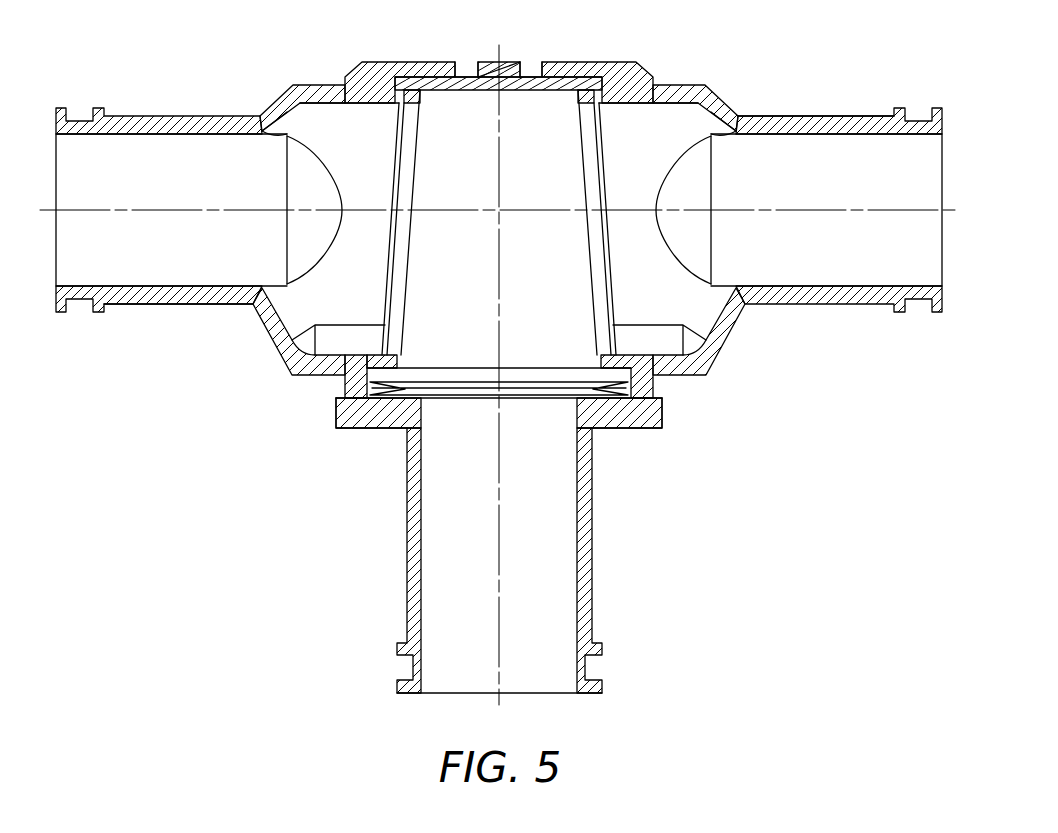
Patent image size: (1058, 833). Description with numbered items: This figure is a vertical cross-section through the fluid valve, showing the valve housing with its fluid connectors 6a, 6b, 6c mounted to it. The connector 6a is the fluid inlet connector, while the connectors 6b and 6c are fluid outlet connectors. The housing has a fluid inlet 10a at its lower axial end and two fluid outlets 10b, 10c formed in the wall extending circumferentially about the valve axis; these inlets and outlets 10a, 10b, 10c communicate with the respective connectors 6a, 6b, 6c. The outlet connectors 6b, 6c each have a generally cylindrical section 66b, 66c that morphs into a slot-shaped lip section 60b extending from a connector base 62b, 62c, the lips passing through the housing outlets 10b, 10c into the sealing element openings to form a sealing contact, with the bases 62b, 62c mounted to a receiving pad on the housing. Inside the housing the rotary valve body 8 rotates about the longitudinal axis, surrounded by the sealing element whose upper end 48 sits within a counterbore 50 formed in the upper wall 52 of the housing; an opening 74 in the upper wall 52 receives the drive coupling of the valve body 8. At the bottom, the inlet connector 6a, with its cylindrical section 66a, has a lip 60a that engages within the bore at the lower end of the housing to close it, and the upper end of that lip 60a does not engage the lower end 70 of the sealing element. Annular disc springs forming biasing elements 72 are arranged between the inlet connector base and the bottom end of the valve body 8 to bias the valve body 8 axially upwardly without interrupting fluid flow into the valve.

The fluid inlet connector 6a is at (592, 575).
The fluid outlet connector 6b is at (175, 116).
The fluid outlet connector 6c is at (843, 304).
The cylindrical section 66a is at (407, 546).
The cylindrical section 66b is at (175, 304).
The cylindrical section 66c is at (823, 116).
The fluid inlet 10a is at (386, 402).
The fluid outlet 10b is at (352, 74).
The fluid outlet 10c is at (662, 82).
The counterbore 50 is at (402, 62).
The upper wall 52 is at (630, 62).
The opening 74 is at (528, 62).
The rotary valve body 8 is at (567, 77).
The upper end of the sealing element 48 is at (420, 97).
The lip 60a is at (650, 376).
The lip 60b is at (374, 108).
The connector base 62b is at (312, 376).
The connector base 62c is at (697, 362).
The lower end of the sealing element 70 is at (368, 355).
The biasing elements 72 is at (526, 396).